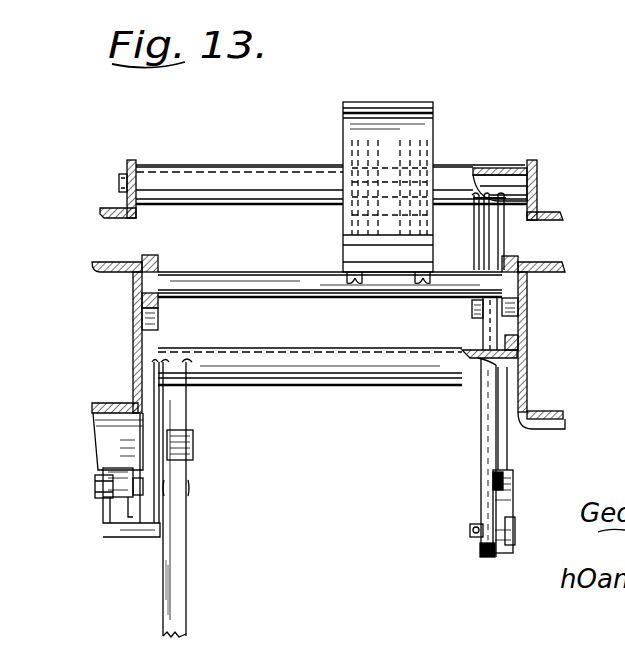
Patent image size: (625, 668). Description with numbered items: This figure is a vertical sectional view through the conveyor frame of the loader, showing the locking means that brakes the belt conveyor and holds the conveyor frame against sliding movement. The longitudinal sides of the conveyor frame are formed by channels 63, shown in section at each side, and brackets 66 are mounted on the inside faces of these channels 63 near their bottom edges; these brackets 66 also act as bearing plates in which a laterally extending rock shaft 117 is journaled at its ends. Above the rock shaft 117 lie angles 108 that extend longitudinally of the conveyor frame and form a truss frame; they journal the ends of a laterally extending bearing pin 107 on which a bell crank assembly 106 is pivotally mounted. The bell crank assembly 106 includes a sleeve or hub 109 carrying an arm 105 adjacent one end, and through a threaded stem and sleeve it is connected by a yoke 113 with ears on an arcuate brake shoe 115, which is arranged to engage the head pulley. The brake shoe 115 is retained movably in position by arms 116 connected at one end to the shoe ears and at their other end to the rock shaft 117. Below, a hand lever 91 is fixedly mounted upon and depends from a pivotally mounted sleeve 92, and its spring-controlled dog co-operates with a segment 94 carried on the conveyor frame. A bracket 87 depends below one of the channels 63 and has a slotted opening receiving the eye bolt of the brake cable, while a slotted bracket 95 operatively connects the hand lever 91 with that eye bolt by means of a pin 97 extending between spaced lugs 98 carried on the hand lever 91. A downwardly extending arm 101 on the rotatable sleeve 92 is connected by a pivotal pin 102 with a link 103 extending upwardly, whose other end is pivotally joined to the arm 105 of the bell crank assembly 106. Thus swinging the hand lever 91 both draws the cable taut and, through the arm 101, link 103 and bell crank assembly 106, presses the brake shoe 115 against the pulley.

The channels 63 is at (114, 268).
The brackets 66 is at (178, 256).
The bracket 87 is at (98, 440).
The hand lever 91 is at (188, 540).
The sleeve 92 is at (373, 394).
The segment 94 is at (190, 446).
The bracket 95 is at (117, 468).
The pin 97 is at (96, 488).
The lugs 98 is at (130, 518).
The arm 101 is at (481, 458).
The pivotal pin 102 is at (470, 531).
The link 103 is at (481, 335).
The arm 105 is at (488, 249).
The bell crank assembly 106 is at (292, 163).
The bearing pin 107 is at (533, 186).
The angles 108 is at (100, 213).
The sleeve or hub 109 is at (328, 178).
The yoke 113 is at (413, 163).
The brake shoe 115 is at (426, 107).
The arms 116 is at (350, 232).
The rock shaft 117 is at (247, 272).